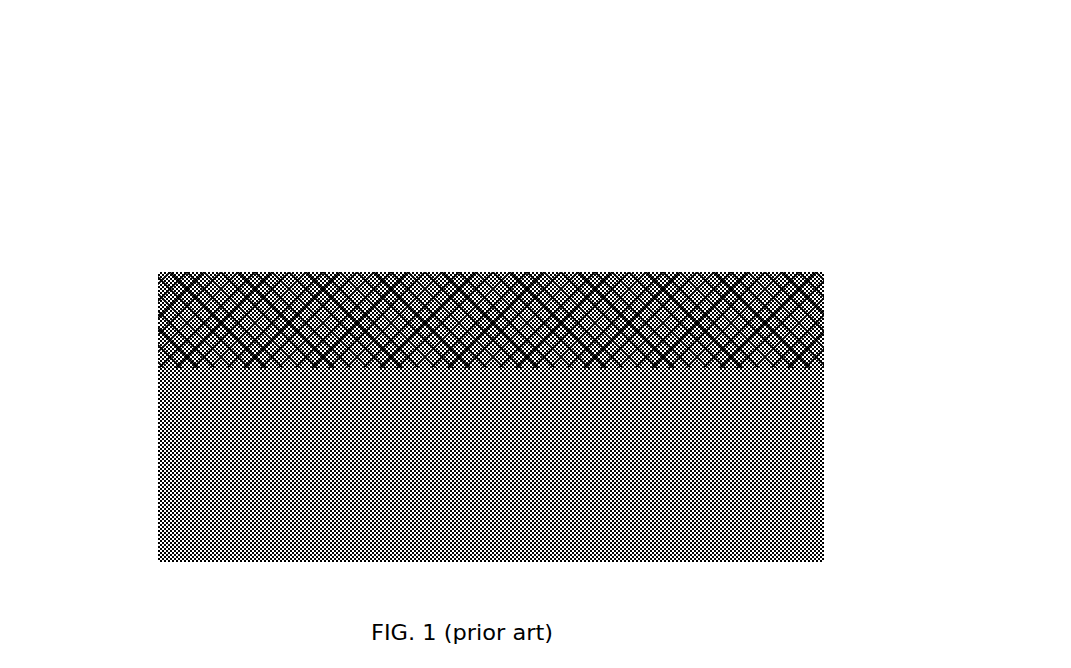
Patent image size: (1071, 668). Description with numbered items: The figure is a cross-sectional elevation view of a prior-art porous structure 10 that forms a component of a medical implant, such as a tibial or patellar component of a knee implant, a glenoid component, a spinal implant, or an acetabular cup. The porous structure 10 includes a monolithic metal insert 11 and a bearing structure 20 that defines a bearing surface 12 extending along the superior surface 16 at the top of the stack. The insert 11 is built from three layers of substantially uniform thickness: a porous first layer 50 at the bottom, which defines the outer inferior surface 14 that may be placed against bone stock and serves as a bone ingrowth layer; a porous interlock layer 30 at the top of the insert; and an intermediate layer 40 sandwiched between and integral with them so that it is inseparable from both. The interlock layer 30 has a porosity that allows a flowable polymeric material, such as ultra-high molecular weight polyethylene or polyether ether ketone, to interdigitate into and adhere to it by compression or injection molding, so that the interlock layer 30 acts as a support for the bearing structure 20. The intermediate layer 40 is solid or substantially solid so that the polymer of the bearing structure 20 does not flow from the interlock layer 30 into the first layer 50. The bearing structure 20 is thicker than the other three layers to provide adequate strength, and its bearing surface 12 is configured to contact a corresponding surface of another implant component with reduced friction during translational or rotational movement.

The porous structure 10 is at (489, 318).
The monolithic metal insert 11 is at (135, 273).
The bearing surface 12 is at (306, 89).
The inferior surface 14 is at (220, 563).
The superior surface 16 is at (670, 89).
The bearing structure 20 is at (755, 204).
The interlock layer 30 is at (755, 337).
The intermediate layer 40 is at (755, 431).
The first layer 50 is at (755, 528).